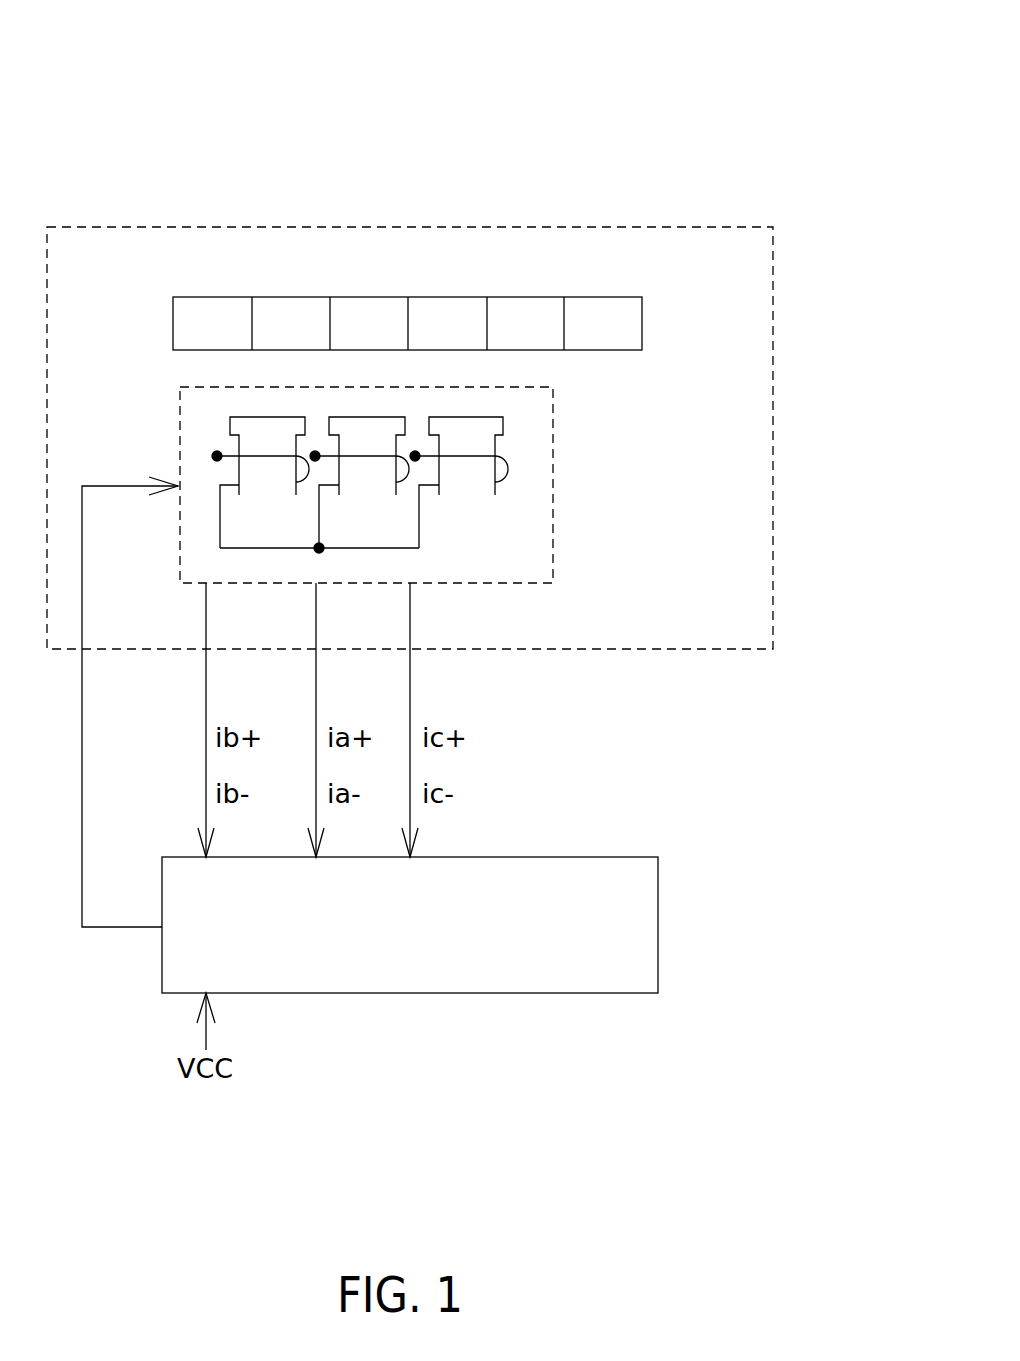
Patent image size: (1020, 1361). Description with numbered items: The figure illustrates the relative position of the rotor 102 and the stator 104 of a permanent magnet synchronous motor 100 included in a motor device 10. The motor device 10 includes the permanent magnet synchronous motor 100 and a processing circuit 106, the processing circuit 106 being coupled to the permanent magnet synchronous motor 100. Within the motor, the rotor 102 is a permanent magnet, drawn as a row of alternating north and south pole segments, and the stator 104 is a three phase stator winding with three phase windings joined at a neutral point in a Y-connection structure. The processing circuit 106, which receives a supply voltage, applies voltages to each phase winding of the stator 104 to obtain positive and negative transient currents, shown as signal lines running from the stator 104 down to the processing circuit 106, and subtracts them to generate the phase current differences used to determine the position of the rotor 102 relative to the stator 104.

The motor device 10 is at (688, 106).
The permanent magnet synchronous motor 100 is at (410, 227).
The rotor 102 is at (642, 323).
The stator 104 is at (553, 488).
The processing circuit 106 is at (658, 912).